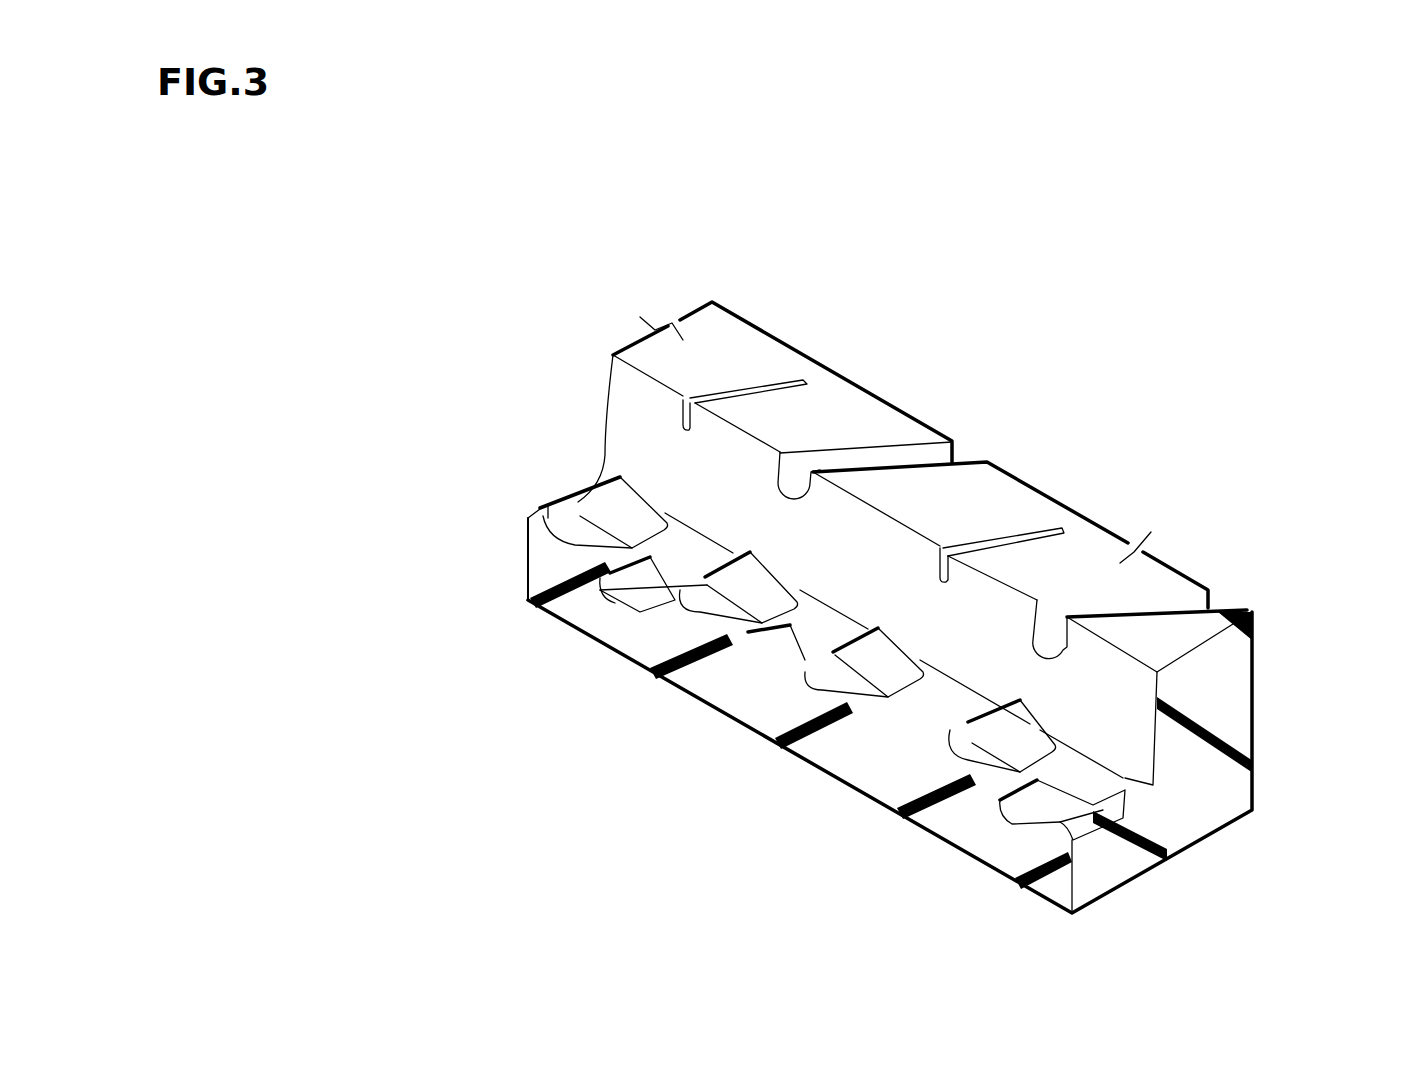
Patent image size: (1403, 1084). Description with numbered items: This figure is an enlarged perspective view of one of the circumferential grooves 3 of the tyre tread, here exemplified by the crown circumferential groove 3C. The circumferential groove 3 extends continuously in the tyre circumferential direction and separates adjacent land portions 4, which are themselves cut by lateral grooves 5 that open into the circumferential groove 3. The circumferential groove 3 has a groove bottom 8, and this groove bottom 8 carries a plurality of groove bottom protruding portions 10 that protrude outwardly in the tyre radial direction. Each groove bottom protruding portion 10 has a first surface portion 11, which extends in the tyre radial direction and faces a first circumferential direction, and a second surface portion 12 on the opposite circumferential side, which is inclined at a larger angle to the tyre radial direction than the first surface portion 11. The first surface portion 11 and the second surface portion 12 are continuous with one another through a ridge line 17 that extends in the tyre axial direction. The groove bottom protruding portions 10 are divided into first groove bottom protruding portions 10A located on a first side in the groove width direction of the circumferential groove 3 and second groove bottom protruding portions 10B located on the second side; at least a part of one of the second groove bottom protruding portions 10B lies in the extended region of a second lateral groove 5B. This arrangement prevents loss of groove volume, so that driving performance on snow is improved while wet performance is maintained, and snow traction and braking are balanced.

The circumferential groove 3 is at (563, 388).
The crown circumferential groove 3C is at (1098, 718).
The land portion 4 is at (712, 345).
The lateral groove 5 is at (883, 455).
The second lateral groove 5B is at (1163, 600).
The groove bottom 8 is at (585, 545).
The groove bottom protruding portion 10 is at (605, 748).
The first groove bottom protruding portion 10A is at (800, 653).
The second groove bottom protruding portion 10B is at (883, 662).
The first surface portion 11 is at (697, 597).
The second surface portion 12 is at (667, 580).
The ridge line 17 is at (978, 742).